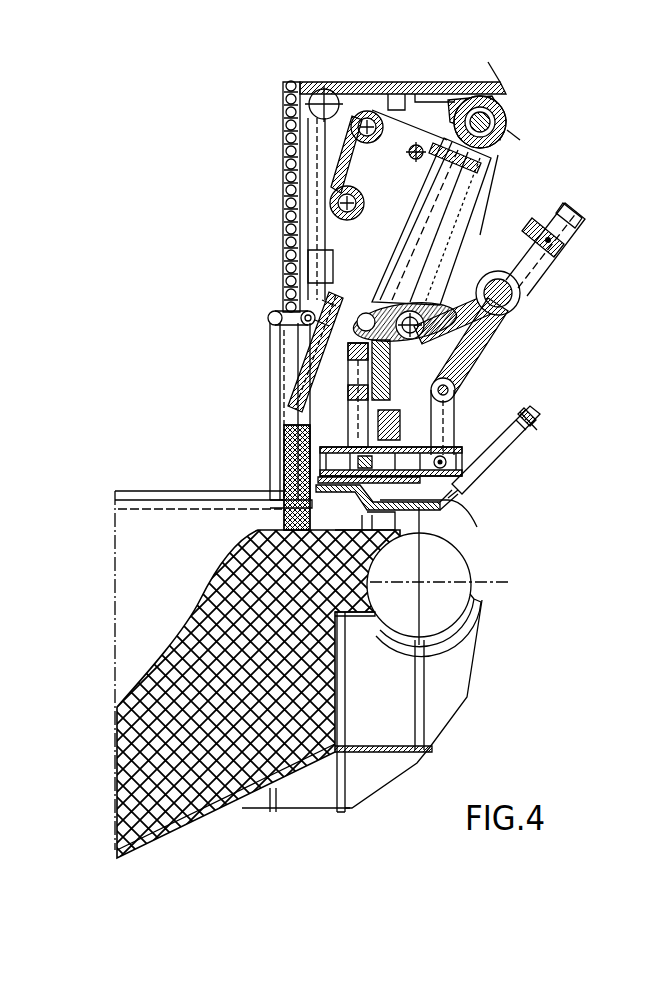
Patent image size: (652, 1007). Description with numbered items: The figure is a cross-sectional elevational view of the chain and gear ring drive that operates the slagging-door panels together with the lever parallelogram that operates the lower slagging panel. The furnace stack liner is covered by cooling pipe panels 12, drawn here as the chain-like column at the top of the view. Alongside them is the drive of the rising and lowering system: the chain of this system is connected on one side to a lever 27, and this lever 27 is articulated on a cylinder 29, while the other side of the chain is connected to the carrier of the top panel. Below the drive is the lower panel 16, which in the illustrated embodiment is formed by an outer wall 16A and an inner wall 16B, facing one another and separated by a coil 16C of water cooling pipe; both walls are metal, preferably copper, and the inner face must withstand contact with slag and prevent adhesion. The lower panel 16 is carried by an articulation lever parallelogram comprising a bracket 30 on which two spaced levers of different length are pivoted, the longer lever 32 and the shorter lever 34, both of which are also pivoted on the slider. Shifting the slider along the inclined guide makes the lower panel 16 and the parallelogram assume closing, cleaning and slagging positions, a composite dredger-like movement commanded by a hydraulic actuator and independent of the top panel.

The cooling pipe panels 12 is at (283, 190).
The lower panel 16 is at (213, 516).
The outer wall 16A is at (349, 615).
The inner wall 16B is at (274, 420).
The coil of water cooling pipe 16C is at (288, 460).
The lever 27 is at (468, 275).
The cylinder 29 is at (568, 207).
The bracket 30 is at (452, 498).
The longer lever 32 is at (374, 428).
The shorter lever 34 is at (458, 418).